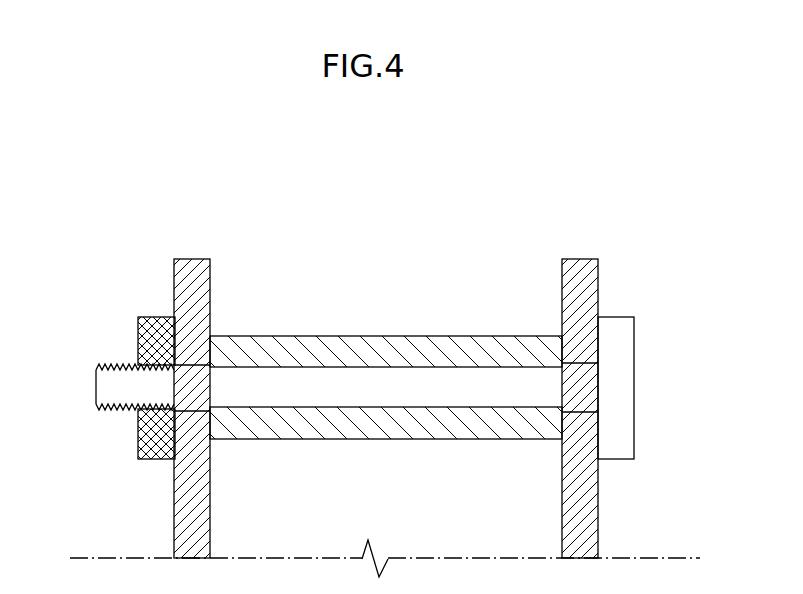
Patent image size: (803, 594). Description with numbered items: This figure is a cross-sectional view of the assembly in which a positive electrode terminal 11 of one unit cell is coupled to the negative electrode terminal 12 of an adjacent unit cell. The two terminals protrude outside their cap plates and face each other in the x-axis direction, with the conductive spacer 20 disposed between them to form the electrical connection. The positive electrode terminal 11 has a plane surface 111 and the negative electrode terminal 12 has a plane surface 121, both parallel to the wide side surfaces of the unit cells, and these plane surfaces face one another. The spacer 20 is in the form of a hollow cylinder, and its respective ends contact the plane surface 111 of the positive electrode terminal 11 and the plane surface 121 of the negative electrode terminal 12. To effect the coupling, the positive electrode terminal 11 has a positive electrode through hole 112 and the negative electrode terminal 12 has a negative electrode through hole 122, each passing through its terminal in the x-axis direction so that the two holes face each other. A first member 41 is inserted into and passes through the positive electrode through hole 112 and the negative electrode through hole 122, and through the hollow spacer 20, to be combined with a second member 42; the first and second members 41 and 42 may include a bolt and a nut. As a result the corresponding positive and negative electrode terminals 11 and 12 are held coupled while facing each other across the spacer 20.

The positive electrode terminal 11 is at (585, 259).
The negative electrode terminal 12 is at (192, 259).
The spacer 20 is at (372, 336).
The first member 41 is at (622, 347).
The second member 42 is at (138, 337).
The plane surface 111 is at (562, 297).
The positive electrode through hole 112 is at (580, 412).
The plane surface 121 is at (213, 283).
The negative electrode through hole 122 is at (188, 404).